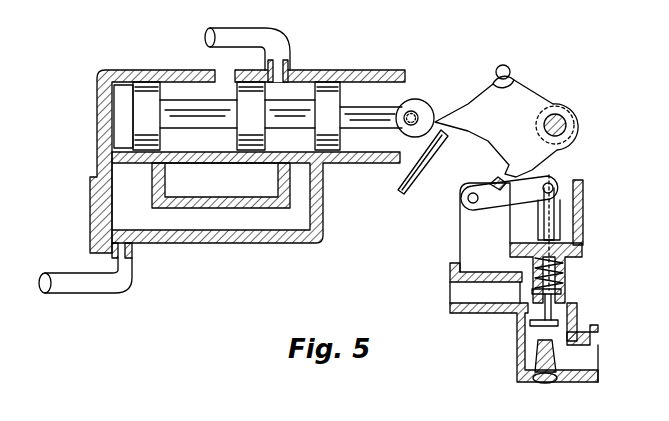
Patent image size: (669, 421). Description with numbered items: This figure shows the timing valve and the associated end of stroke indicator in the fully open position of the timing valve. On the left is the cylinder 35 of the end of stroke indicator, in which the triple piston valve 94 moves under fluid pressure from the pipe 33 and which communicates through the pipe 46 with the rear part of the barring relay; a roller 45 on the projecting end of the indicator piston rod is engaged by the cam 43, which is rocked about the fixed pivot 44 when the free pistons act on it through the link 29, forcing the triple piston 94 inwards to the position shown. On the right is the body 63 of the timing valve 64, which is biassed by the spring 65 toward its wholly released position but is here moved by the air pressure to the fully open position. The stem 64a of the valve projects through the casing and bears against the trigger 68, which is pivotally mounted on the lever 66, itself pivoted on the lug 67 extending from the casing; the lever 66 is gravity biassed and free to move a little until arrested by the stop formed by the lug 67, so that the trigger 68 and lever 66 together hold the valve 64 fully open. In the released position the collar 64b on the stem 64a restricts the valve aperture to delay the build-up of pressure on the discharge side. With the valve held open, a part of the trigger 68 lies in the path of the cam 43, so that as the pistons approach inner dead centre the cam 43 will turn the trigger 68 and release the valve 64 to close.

The cylinder 35 is at (100, 96).
The pipe 46 is at (256, 50).
The valve spool 94 is at (262, 110).
The roller 45 is at (420, 106).
The cam 43 is at (518, 100).
The fixed pivot 44 is at (557, 124).
The link 29 is at (406, 192).
The lug 67 is at (460, 245).
The lever 66 is at (510, 204).
The trigger 68 is at (560, 182).
The valve stem 64a is at (545, 232).
The spring 65 is at (562, 290).
The collar 64b is at (560, 307).
The timing valve 64 is at (540, 326).
The valve body 63 is at (450, 306).
The pipe 33 is at (134, 268).